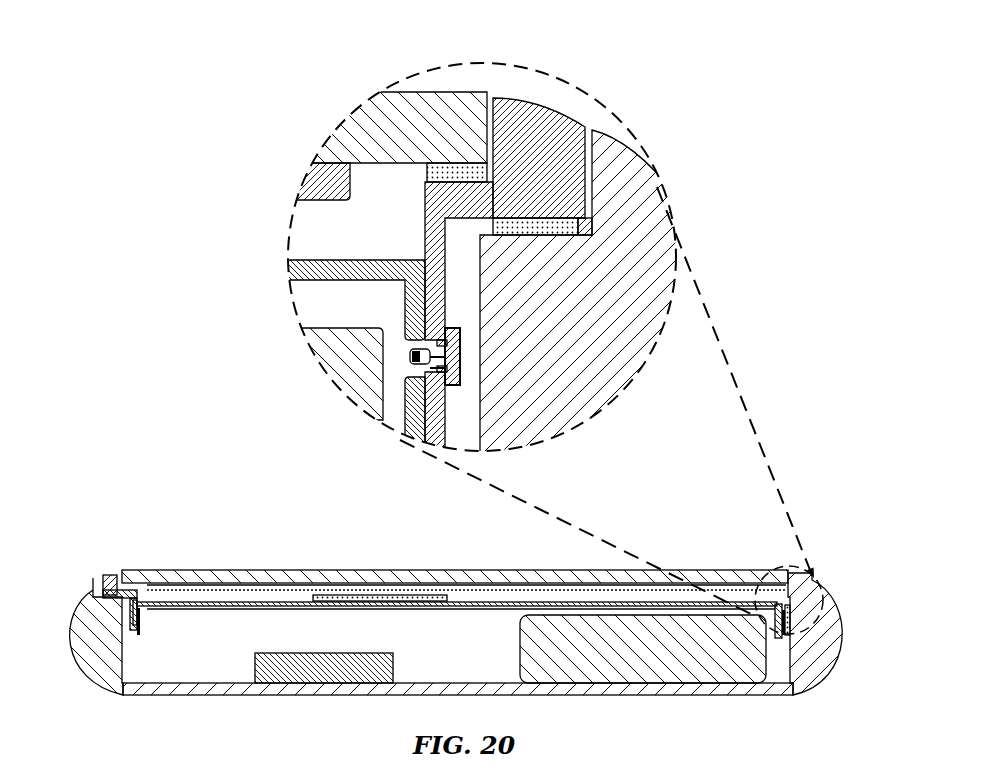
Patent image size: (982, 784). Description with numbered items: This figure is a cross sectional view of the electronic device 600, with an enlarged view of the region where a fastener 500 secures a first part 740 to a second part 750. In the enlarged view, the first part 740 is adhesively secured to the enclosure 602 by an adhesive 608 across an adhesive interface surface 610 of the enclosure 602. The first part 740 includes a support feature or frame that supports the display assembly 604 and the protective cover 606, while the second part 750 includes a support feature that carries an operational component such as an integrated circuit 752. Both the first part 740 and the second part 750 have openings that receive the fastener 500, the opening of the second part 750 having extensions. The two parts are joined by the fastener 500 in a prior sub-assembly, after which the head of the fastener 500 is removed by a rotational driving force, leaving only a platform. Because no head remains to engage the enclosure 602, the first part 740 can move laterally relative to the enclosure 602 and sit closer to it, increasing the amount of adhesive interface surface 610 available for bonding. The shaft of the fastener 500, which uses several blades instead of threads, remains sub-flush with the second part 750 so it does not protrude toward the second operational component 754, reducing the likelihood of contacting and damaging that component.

The fastener 500 is at (452, 388).
The electronic device 600 is at (456, 563).
The enclosure 602 is at (585, 322).
The display assembly 604 is at (309, 163).
The protective cover 606 is at (425, 139).
The adhesive 608 is at (585, 227).
The adhesive interface surface 610 is at (481, 181).
The first part 740 is at (583, 121).
The second part 750 is at (302, 260).
The integrated circuit 752 is at (340, 596).
The second operational component 754 is at (663, 656).